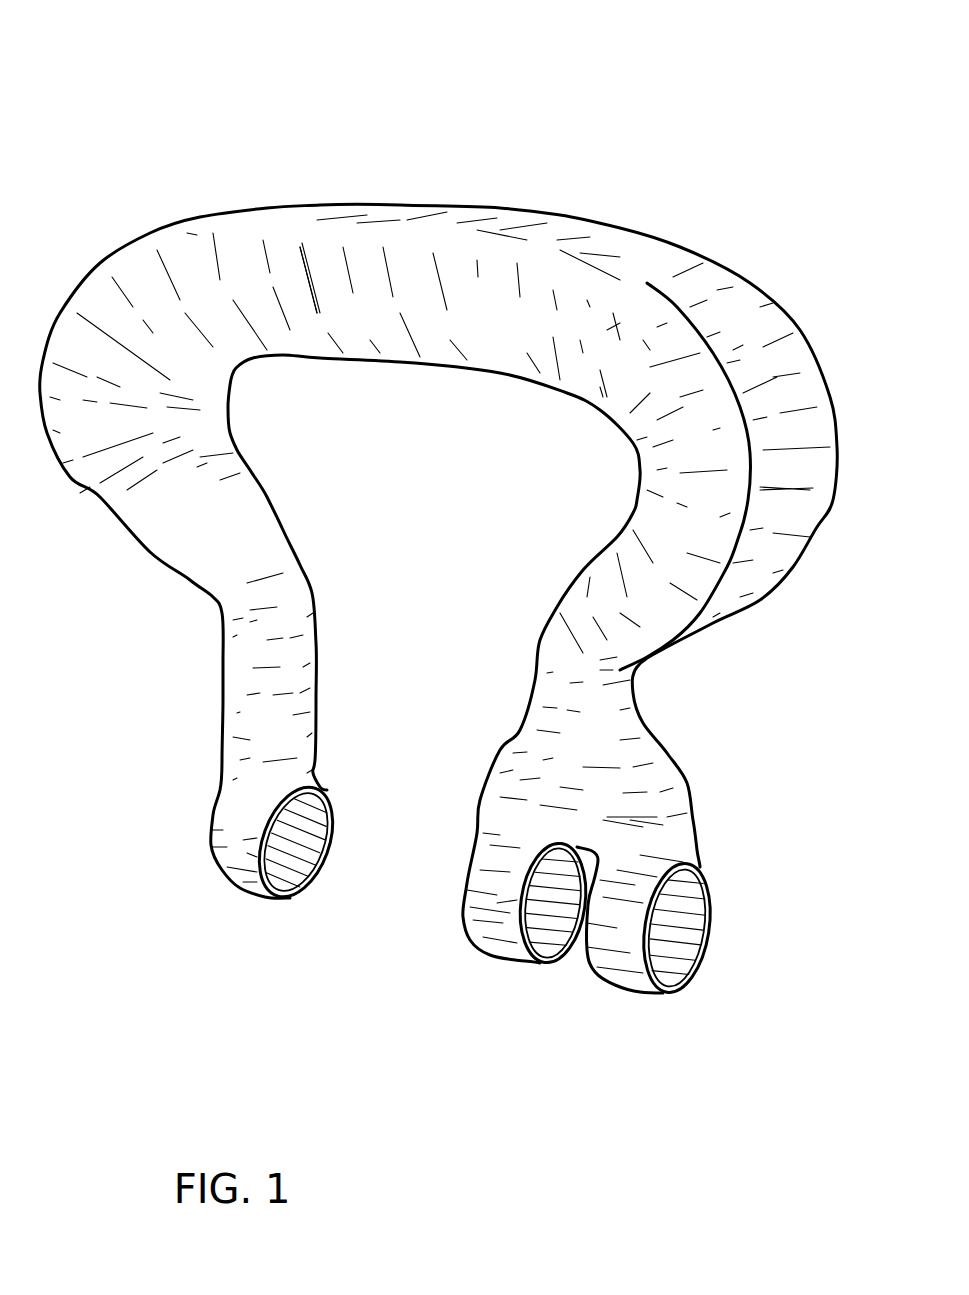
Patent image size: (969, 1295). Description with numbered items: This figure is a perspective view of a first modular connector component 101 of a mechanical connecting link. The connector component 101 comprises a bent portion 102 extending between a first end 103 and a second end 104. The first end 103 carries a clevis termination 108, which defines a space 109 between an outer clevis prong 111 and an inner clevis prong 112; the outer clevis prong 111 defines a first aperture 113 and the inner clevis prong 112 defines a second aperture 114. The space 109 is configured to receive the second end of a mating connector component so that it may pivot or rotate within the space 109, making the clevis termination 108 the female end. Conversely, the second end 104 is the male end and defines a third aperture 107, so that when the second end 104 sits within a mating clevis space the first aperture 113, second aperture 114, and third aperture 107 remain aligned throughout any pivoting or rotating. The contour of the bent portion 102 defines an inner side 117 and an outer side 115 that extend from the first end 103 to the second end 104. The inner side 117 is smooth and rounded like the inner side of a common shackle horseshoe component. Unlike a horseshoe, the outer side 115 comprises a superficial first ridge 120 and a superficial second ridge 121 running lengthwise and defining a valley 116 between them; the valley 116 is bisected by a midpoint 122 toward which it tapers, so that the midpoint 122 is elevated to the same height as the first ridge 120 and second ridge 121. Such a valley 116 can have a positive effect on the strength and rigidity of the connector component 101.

The modular connector component 101 is at (103, 80).
The bent portion 102 is at (275, 123).
The first end 103 is at (738, 767).
The second end 104 is at (170, 920).
The third aperture 107 is at (287, 867).
The clevis termination 108 is at (558, 1082).
The space 109 is at (570, 950).
The outer clevis prong 111 is at (613, 963).
The inner clevis prong 112 is at (477, 913).
The first aperture 113 is at (707, 922).
The second aperture 114 is at (540, 960).
The outer side 115 is at (578, 162).
The valley 116 is at (640, 257).
The inner side 117 is at (402, 428).
The first ridge 120 is at (807, 343).
The second ridge 121 is at (697, 325).
The midpoint 122 is at (424, 208).